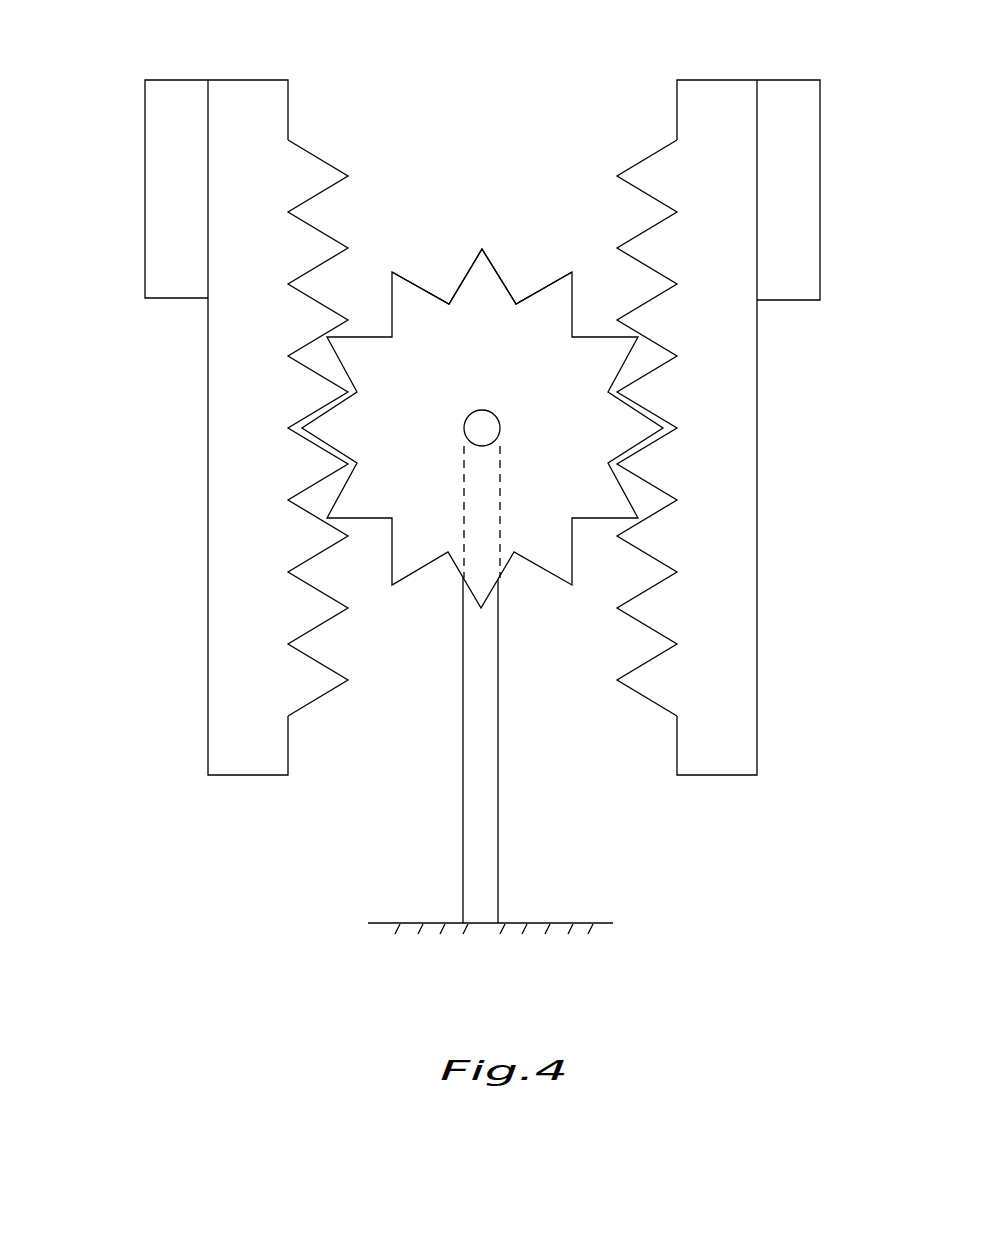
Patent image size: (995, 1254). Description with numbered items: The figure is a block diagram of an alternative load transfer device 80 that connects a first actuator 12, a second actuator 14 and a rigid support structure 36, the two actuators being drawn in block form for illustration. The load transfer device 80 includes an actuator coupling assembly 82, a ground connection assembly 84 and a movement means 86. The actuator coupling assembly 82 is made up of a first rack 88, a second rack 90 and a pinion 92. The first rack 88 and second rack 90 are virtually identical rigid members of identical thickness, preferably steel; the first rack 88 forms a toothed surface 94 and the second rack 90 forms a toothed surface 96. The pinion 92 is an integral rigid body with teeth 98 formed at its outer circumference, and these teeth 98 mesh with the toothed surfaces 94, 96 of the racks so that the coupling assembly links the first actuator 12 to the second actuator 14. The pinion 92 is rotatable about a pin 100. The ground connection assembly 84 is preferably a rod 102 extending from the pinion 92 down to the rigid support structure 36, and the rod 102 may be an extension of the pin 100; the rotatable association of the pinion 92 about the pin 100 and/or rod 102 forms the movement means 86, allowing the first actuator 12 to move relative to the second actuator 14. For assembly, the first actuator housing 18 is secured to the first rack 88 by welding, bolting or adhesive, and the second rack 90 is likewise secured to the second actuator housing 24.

The load transfer device 80 is at (340, 27).
The actuator coupling assembly 82 is at (300, 134).
The first actuator 12 is at (132, 275).
The second actuator 14 is at (836, 269).
The first actuator housing 18 is at (165, 207).
The second actuator housing 24 is at (808, 147).
The first rack 88 is at (217, 718).
The second rack 90 is at (738, 698).
The toothed surface 94 is at (320, 628).
The toothed surface 96 is at (665, 563).
The pinion 92 is at (418, 557).
The teeth 98 is at (362, 340).
The movement means 86 is at (500, 401).
The pin 100 is at (500, 428).
The ground connection assembly 84 is at (516, 809).
The rod 102 is at (463, 828).
The rigid support structure 36 is at (563, 923).